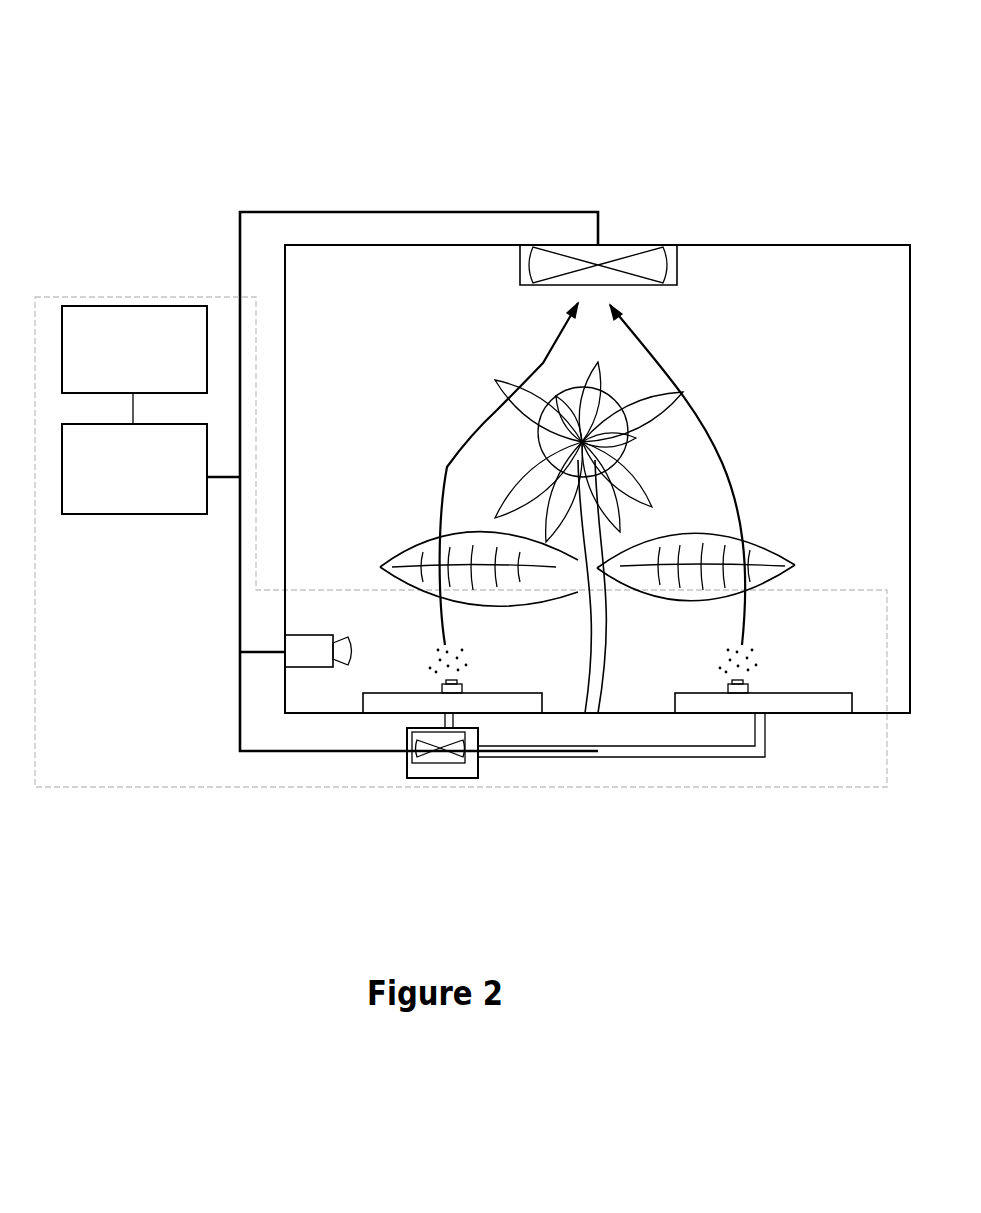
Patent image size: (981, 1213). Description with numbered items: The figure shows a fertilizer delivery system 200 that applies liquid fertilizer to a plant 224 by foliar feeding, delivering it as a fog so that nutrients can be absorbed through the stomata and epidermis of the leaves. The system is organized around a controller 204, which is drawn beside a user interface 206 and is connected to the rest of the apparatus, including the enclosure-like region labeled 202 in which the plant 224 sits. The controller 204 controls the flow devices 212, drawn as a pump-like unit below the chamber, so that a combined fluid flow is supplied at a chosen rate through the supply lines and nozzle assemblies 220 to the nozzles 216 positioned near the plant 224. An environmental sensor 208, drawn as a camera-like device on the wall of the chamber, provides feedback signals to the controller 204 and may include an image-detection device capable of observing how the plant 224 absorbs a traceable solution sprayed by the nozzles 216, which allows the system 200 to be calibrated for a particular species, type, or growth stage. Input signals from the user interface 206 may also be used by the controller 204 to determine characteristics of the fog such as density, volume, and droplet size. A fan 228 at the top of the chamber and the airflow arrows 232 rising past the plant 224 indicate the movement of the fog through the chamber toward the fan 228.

The fertilizer delivery system 200 is at (167, 78).
The growth chamber assembly 202 is at (232, 786).
The controller 204 is at (162, 514).
The user interface 206 is at (142, 305).
The environmental sensor 208 is at (285, 643).
The flow devices 212 is at (478, 770).
The nozzles 216 is at (480, 673).
The nozzle and supply line 220 is at (417, 643).
The plant 224 is at (483, 377).
The fan 228 is at (677, 265).
The airflow 232 is at (735, 450).